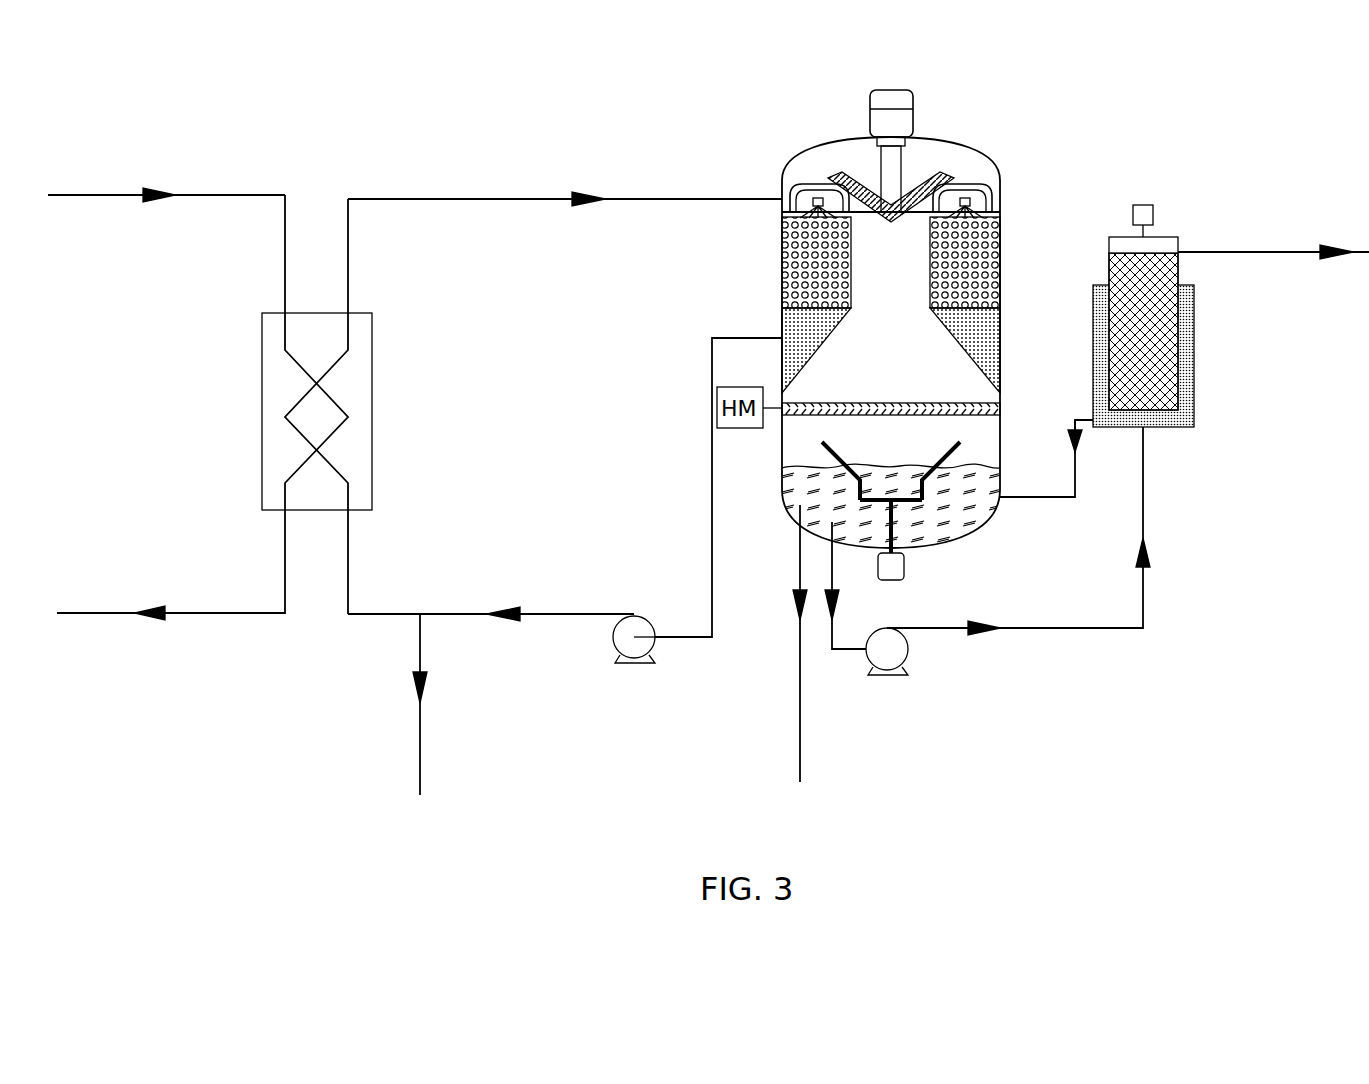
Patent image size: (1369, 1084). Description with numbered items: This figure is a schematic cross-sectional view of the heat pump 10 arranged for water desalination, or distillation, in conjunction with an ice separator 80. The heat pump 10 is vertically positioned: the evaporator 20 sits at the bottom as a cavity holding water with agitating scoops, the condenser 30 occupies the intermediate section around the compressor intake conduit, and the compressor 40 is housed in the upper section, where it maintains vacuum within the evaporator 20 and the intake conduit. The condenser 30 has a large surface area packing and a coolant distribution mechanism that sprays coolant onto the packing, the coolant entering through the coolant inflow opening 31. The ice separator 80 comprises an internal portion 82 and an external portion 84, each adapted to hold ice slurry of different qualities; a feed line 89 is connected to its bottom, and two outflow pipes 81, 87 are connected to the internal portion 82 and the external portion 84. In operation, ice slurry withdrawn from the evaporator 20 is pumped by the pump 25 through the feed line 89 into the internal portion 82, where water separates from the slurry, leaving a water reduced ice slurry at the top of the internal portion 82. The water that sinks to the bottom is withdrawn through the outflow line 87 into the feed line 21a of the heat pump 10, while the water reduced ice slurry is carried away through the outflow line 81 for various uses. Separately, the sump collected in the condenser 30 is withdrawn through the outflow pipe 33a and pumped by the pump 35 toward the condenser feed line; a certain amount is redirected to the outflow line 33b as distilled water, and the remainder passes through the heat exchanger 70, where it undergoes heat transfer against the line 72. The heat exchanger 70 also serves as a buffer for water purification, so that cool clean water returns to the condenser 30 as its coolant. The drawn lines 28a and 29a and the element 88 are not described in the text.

The heat pump 10 is at (975, 148).
The evaporator 20 is at (777, 500).
The feed line 21a is at (1030, 497).
The pump 25 is at (905, 664).
The liquid withdrawal line 28a is at (845, 650).
The drain line 29a is at (800, 700).
The condenser 30 is at (775, 248).
The coolant inflow opening 31 is at (650, 199).
The outflow pipe 33a is at (712, 490).
The outflow line 33b is at (420, 725).
The pump 35 is at (617, 657).
The compressor 40 is at (785, 150).
The heat exchanger 70 is at (262, 413).
The line 72 is at (120, 195).
The ice separator 80 is at (1164, 269).
The outflow pipe 81 is at (1273, 252).
The internal portion 82 is at (1109, 272).
The external portion 84 is at (1093, 320).
The outflow pipe 87 is at (1075, 420).
The vent valve 88 is at (1143, 203).
The feed line 89 is at (1140, 645).